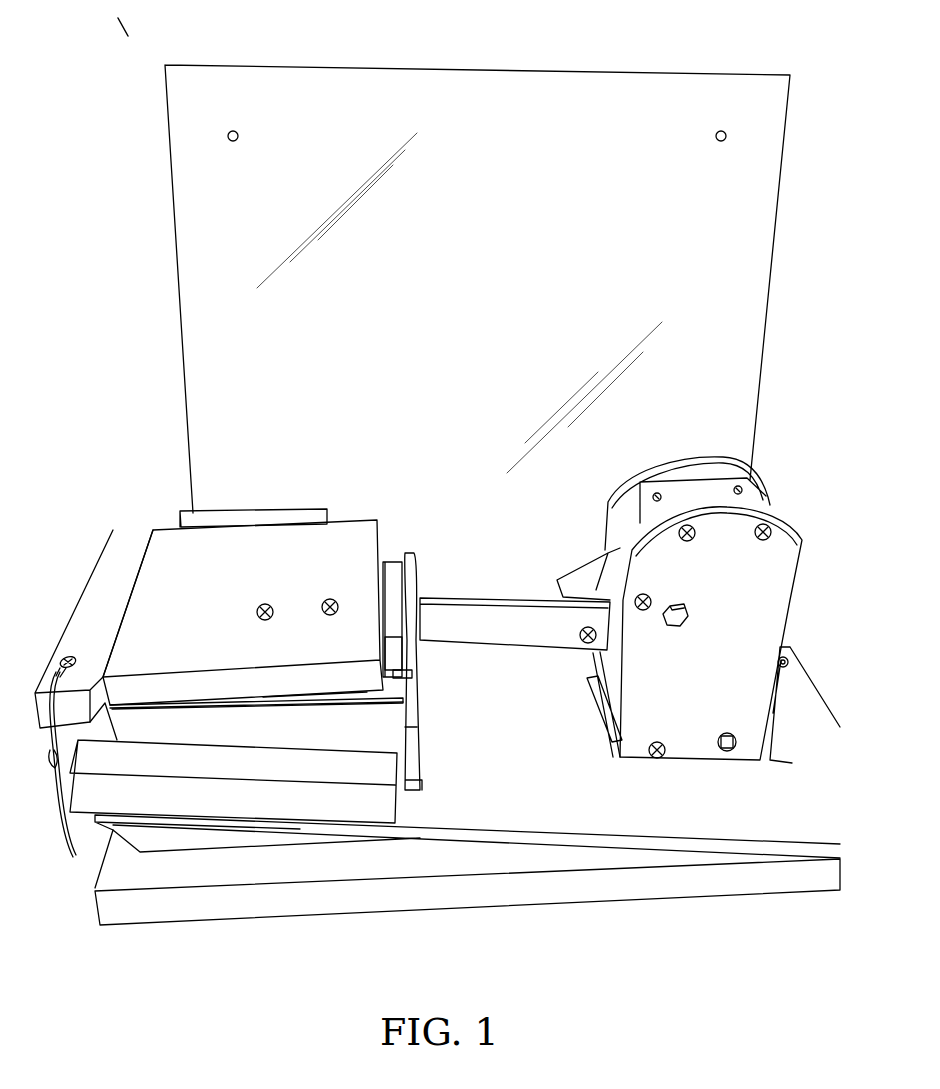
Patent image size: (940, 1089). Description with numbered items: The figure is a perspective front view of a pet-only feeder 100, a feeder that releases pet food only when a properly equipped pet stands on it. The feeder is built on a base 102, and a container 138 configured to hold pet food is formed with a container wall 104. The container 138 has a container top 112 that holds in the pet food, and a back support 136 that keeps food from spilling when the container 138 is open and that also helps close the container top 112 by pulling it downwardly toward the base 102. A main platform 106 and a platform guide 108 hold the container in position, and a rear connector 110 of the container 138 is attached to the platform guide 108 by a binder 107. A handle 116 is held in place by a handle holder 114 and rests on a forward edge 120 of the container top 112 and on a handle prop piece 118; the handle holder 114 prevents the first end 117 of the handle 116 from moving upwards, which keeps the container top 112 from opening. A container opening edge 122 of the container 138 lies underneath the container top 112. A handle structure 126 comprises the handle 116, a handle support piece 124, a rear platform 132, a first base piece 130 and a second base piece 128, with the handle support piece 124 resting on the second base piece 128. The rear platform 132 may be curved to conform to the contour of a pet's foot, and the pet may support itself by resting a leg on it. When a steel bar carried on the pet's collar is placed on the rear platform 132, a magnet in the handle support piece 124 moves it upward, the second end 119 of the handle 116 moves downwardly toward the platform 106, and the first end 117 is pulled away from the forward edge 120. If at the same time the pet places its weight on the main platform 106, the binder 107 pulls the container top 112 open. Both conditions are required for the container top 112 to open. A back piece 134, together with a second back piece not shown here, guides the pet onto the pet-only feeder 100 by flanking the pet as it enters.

The pet-only feeder 100 is at (128, 38).
The base 102 is at (120, 908).
The container wall 104 is at (167, 840).
The main platform 106 is at (117, 837).
The binder 107 is at (55, 757).
The platform guide 108 is at (93, 793).
The rear connector 110 is at (110, 583).
The container top 112 is at (297, 563).
The handle holder 114 is at (415, 565).
The handle 116 is at (502, 625).
The first end 117 is at (397, 620).
The handle prop piece 118 is at (403, 655).
The second end 119 is at (577, 617).
The forward edge 120 is at (397, 675).
The container opening edge 122 is at (393, 692).
The handle support piece 124 is at (600, 677).
The handle structure 126 is at (697, 690).
The second base piece 128 is at (780, 677).
The first base piece 130 is at (773, 713).
The rear platform 132 is at (700, 498).
The back piece 134 is at (193, 207).
The back support 136 is at (217, 515).
The container 138 is at (297, 722).